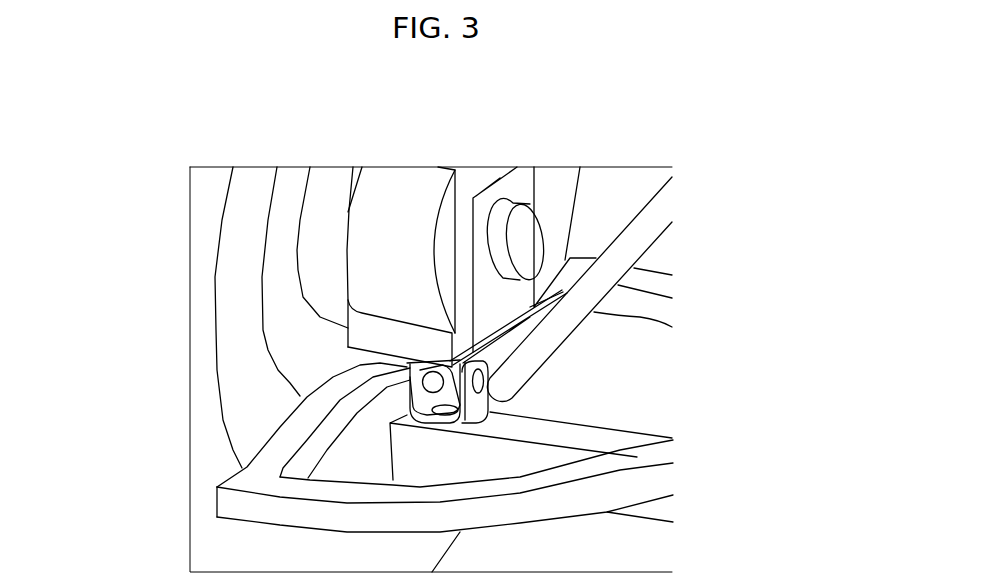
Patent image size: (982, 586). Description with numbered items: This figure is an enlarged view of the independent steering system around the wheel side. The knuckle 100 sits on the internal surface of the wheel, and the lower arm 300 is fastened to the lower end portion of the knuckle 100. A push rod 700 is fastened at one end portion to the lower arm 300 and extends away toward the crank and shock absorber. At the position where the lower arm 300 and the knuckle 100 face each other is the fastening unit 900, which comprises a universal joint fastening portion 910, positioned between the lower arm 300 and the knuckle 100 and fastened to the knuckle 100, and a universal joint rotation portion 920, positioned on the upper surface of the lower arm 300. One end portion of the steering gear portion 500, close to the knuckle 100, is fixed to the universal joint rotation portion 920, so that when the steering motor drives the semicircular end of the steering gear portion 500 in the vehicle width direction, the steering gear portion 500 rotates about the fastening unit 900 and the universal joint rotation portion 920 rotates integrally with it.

The knuckle 100 is at (389, 205).
The lower arm 300 is at (583, 433).
The steering gear portion 500 is at (248, 484).
The push rod 700 is at (640, 235).
The fastening unit 900 is at (275, 388).
The universal joint fastening portion 910 is at (433, 382).
The universal joint rotation portion 920 is at (410, 400).